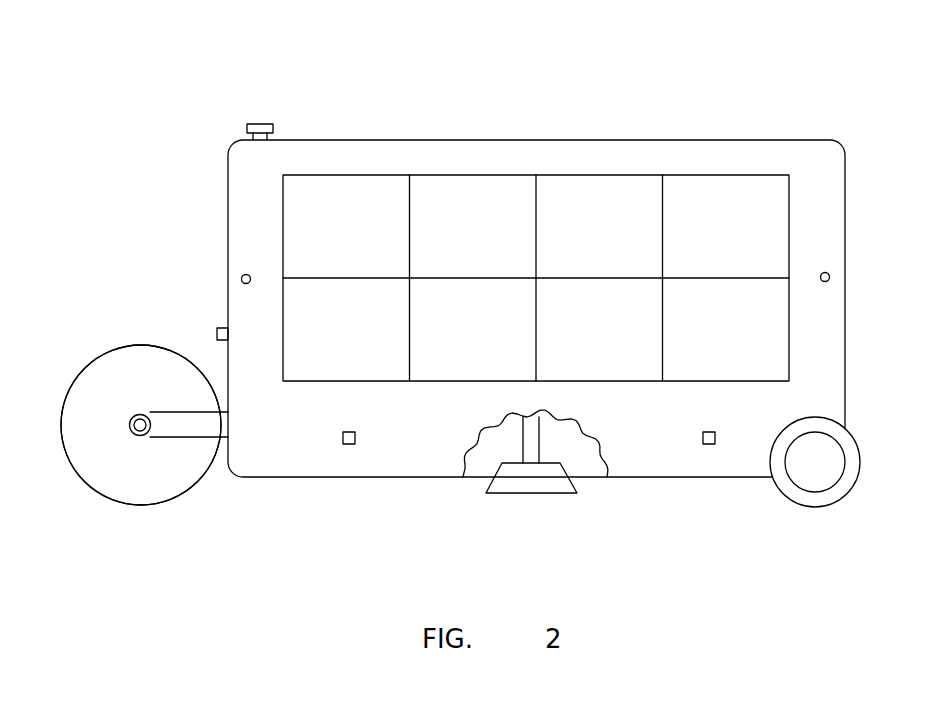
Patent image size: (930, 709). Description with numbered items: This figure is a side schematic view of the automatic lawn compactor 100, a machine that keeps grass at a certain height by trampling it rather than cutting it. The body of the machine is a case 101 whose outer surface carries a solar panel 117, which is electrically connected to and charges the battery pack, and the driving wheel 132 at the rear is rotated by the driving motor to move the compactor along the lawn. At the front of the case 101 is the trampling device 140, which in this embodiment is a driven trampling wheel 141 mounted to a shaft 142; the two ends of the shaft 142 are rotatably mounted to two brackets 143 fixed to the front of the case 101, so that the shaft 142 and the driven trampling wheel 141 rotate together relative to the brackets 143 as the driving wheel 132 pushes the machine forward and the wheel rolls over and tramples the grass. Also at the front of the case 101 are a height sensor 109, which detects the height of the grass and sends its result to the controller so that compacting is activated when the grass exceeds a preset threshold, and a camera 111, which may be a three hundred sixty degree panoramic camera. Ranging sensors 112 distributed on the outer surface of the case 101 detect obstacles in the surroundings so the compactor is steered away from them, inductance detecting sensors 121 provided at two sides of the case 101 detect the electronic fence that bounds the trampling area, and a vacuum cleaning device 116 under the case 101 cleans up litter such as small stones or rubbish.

The automatic lawn compactor 100 is at (498, 70).
The case 101 is at (245, 208).
The height sensor 109 is at (216, 333).
The camera 111 is at (260, 125).
The ranging sensor 112 is at (242, 280).
The vacuum cleaning device 116 is at (535, 486).
The solar panel 117 is at (740, 210).
The inductance detecting sensor 121 is at (349, 444).
The driving wheel 132 is at (818, 475).
The trampling device 140 is at (78, 342).
The driven trampling wheel 141 is at (162, 476).
The shaft 142 is at (143, 436).
The bracket 143 is at (194, 420).